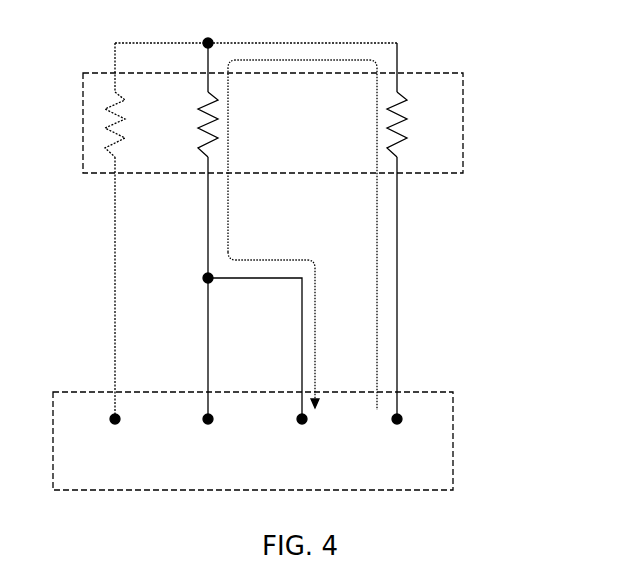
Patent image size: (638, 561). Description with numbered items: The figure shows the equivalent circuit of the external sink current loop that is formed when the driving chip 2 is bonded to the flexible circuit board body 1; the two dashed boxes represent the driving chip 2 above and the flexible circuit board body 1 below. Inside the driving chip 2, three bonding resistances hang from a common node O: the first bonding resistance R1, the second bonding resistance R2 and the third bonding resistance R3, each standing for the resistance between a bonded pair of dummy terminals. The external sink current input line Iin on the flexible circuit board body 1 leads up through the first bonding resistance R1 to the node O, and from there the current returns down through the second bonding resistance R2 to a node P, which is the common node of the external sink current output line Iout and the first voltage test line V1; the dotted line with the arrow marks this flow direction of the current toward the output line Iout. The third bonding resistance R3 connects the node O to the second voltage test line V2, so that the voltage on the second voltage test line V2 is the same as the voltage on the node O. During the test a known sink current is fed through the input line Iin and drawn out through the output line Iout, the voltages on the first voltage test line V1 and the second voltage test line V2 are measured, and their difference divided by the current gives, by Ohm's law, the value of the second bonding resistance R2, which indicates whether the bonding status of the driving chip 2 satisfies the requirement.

The flexible circuit board body 1 is at (453, 428).
The driving chip 2 is at (463, 127).
The first bonding resistance R1 is at (416, 124).
The second bonding resistance R2 is at (230, 124).
The third bonding resistance R3 is at (134, 124).
The common node O is at (196, 29).
The node P is at (193, 284).
The first voltage test line V1 is at (209, 439).
The second voltage test line V2 is at (117, 439).
The external sink current output line Iout is at (303, 439).
The external sink current input line Iin is at (396, 439).